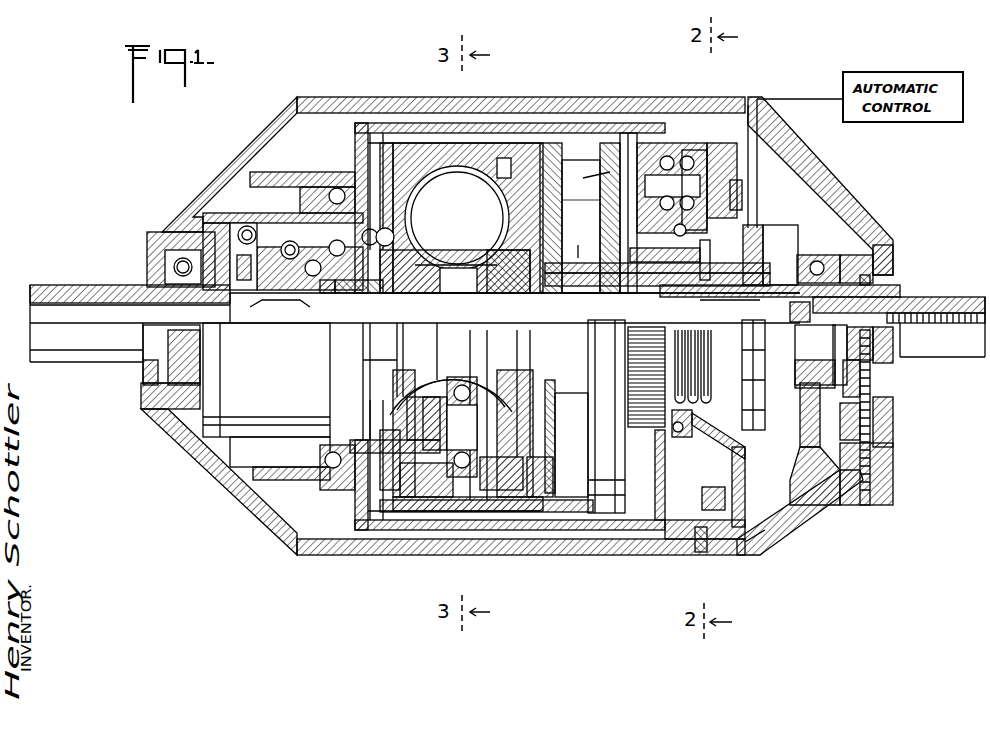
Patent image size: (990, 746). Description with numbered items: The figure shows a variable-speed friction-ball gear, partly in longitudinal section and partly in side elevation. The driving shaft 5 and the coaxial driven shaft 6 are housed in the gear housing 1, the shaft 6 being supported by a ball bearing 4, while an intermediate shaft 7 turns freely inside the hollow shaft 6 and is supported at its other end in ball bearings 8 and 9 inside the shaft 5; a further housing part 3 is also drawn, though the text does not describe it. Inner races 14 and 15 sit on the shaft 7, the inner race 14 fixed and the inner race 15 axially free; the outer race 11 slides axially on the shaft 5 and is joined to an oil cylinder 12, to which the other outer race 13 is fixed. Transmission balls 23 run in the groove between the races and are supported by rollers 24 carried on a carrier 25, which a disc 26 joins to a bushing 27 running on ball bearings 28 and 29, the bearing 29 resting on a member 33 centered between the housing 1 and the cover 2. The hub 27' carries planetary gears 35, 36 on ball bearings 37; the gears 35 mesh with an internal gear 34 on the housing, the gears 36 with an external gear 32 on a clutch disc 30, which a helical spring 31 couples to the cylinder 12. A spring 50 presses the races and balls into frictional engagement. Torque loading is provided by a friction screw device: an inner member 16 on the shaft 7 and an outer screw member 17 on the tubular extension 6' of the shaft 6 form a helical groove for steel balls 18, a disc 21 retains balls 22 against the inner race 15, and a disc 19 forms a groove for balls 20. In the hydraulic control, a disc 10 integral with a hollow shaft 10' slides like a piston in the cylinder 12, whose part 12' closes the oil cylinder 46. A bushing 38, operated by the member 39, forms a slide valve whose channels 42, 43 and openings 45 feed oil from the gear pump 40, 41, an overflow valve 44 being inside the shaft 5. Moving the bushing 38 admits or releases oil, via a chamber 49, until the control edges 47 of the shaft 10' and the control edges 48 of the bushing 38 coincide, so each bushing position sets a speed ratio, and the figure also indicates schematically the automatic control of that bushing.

The gear housing 1 is at (575, 558).
The cover 2 is at (858, 500).
The housing end section 3 is at (870, 226).
The ball bearing 4 is at (180, 245).
The driving shaft 5 is at (960, 297).
The driven shaft 6 is at (130, 307).
The tubular extension 6' is at (253, 216).
The intermediate shaft 7 is at (292, 323).
The ball bearing 8 is at (560, 288).
The ball bearing 9 is at (790, 328).
The disc 10 is at (580, 282).
The hollow shaft 10' is at (581, 206).
The outer race 11 is at (515, 160).
The oil cylinder 12 is at (606, 454).
The part of cylinder 12' is at (586, 181).
The outer race 13 is at (425, 160).
The inner race 14 is at (522, 287).
The inner race 15 is at (425, 282).
The inner member 16 is at (340, 298).
The outer screw member 17 is at (318, 230).
The steel balls 18 is at (291, 243).
The disc 19 is at (183, 258).
The balls 20 is at (247, 225).
The disc 21 is at (392, 293).
The balls 22 is at (392, 233).
The transmission balls 23 is at (477, 210).
The rollers 24 is at (462, 480).
The carrier 25 is at (430, 470).
The disc 26 is at (355, 530).
The bushing 27 is at (695, 554).
The hub 27' is at (762, 151).
The ball bearing 28 is at (333, 470).
The ball bearing 29 is at (690, 432).
The clutch disc 30 is at (628, 140).
The helical spring 31 is at (712, 378).
The external gear 32 is at (640, 395).
The member 33 is at (748, 540).
The internal gear 34 is at (700, 548).
The planetary gears 35 is at (735, 185).
The planetary gears 36 is at (667, 158).
The ball bearings 37 is at (695, 172).
The bushing 38 is at (765, 232).
The member 39 is at (760, 240).
The gear pump 40 is at (895, 265).
The gear pump 41 is at (870, 463).
The channel 42 is at (768, 285).
The channel 43 is at (702, 303).
The overflow valve 44 is at (880, 338).
The openings 45 is at (572, 243).
The oil cylinder 46 is at (580, 460).
The control edges 47 is at (703, 268).
The control edges 48 is at (685, 290).
The chamber 49 is at (612, 296).
The spring 50 is at (345, 296).